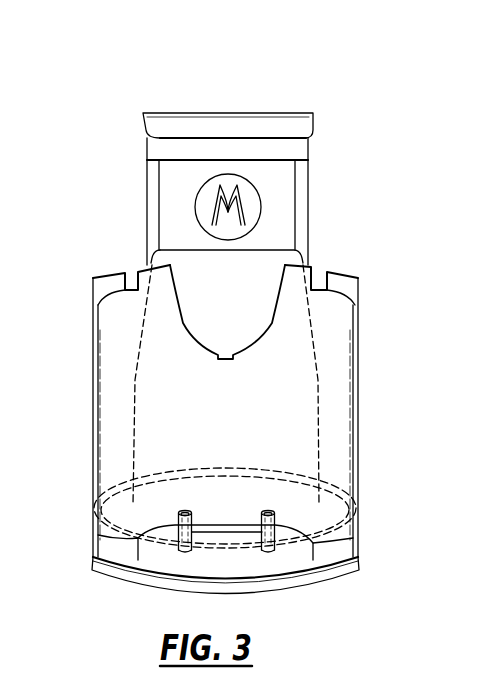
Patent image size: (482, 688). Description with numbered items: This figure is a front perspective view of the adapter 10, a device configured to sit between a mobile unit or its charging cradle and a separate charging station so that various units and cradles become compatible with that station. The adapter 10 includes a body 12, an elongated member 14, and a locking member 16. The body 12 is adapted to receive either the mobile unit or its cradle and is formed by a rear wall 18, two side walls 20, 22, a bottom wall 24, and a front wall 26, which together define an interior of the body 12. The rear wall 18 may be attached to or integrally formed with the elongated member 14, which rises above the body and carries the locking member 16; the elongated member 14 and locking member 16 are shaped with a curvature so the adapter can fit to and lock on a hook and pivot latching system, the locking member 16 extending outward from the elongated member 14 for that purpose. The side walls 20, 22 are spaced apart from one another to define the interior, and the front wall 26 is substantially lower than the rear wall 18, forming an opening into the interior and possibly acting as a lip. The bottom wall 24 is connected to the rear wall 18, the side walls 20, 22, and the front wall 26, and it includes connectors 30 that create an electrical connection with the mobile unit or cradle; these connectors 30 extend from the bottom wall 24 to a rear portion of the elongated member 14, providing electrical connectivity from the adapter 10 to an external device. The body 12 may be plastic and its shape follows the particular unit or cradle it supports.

The adapter 10 is at (211, 331).
The body 12 is at (211, 441).
The elongated member 14 is at (258, 166).
The locking member 16 is at (285, 127).
The rear wall 18 is at (193, 412).
The side wall 20 is at (357, 463).
The side wall 22 is at (92, 412).
The bottom wall 24 is at (215, 552).
The front wall 26 is at (122, 573).
The connectors 30 is at (273, 546).